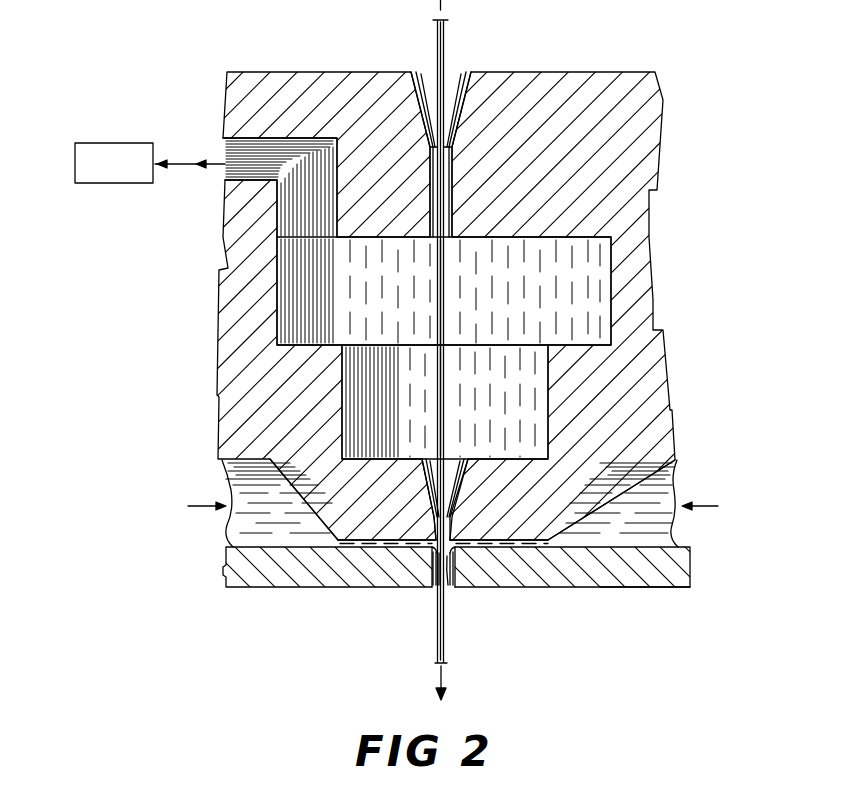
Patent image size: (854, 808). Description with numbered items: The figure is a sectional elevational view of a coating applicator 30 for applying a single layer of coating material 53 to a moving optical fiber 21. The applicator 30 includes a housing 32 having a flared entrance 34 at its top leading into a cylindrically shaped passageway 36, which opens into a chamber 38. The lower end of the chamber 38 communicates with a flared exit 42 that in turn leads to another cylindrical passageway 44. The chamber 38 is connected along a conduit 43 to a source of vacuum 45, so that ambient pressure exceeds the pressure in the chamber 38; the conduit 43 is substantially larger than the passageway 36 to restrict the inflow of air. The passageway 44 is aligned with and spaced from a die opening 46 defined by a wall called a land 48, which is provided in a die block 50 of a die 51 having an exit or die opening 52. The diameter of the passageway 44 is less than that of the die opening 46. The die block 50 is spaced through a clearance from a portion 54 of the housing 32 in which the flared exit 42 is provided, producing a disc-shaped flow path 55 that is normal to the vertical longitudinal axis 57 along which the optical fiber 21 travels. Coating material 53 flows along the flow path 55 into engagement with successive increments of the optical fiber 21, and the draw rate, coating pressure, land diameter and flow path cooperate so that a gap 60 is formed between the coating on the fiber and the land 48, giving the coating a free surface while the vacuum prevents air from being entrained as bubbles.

The optical fiber 21 is at (445, 44).
The coating applicator 30 is at (700, 218).
The housing 32 is at (653, 158).
The flared entrance 34 is at (424, 72).
The cylindrically shaped passageway 36 is at (451, 178).
The chamber 38 is at (597, 290).
The flared exit 42 is at (458, 472).
The conduit 43 is at (230, 147).
The cylindrical passageway 44 is at (436, 522).
The source of vacuum 45 is at (115, 143).
The die opening 46 is at (437, 566).
The land 48 is at (430, 562).
The die block 50 is at (606, 582).
The die 51 is at (630, 588).
The exit or die opening 52 is at (444, 590).
The coating material 53 is at (230, 478).
The portion of the housing 54 is at (533, 527).
The flow path 55 is at (346, 546).
The vertical longitudinal axis 57 is at (447, 336).
The gap 60 is at (452, 580).